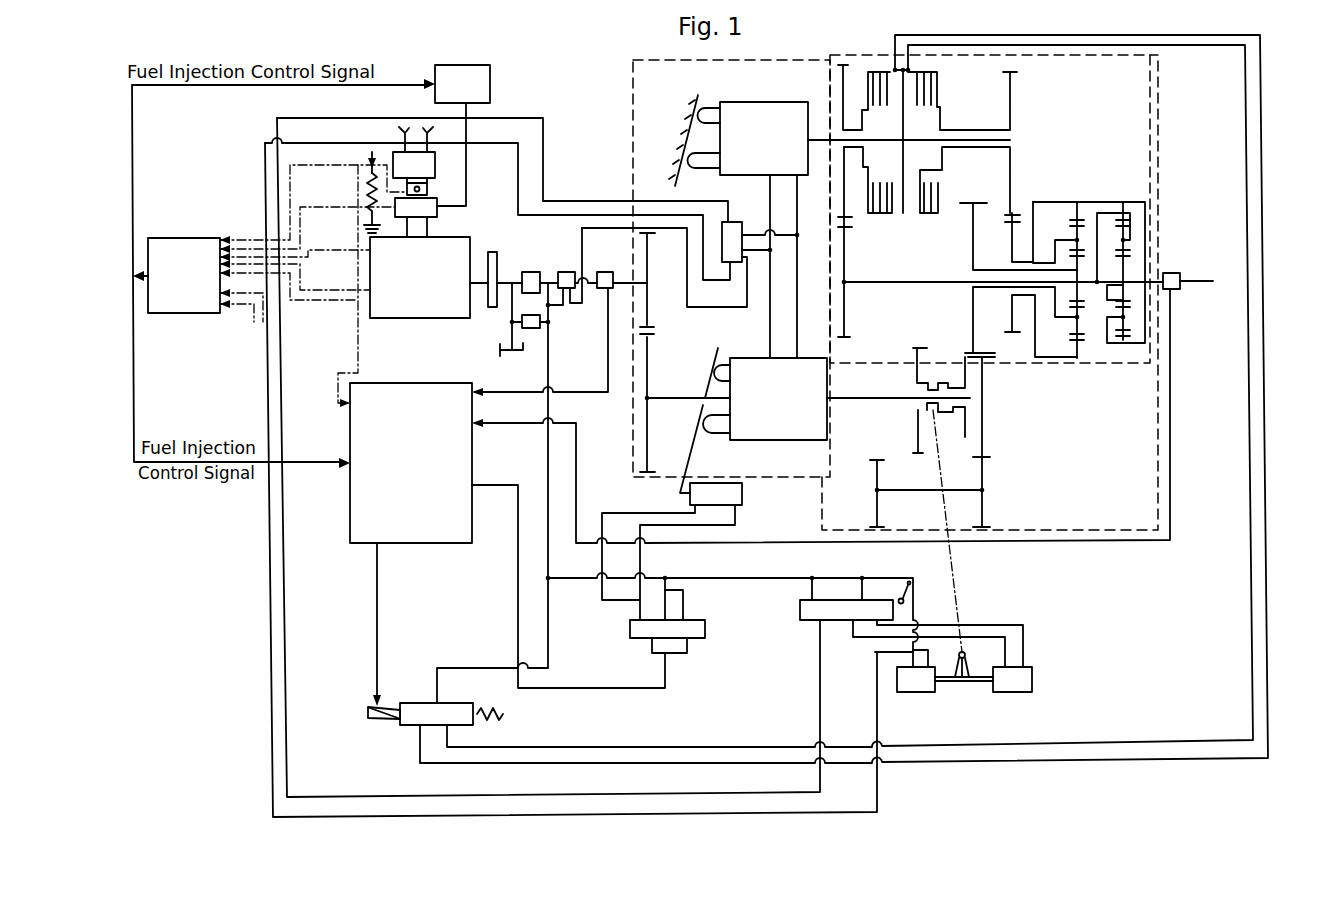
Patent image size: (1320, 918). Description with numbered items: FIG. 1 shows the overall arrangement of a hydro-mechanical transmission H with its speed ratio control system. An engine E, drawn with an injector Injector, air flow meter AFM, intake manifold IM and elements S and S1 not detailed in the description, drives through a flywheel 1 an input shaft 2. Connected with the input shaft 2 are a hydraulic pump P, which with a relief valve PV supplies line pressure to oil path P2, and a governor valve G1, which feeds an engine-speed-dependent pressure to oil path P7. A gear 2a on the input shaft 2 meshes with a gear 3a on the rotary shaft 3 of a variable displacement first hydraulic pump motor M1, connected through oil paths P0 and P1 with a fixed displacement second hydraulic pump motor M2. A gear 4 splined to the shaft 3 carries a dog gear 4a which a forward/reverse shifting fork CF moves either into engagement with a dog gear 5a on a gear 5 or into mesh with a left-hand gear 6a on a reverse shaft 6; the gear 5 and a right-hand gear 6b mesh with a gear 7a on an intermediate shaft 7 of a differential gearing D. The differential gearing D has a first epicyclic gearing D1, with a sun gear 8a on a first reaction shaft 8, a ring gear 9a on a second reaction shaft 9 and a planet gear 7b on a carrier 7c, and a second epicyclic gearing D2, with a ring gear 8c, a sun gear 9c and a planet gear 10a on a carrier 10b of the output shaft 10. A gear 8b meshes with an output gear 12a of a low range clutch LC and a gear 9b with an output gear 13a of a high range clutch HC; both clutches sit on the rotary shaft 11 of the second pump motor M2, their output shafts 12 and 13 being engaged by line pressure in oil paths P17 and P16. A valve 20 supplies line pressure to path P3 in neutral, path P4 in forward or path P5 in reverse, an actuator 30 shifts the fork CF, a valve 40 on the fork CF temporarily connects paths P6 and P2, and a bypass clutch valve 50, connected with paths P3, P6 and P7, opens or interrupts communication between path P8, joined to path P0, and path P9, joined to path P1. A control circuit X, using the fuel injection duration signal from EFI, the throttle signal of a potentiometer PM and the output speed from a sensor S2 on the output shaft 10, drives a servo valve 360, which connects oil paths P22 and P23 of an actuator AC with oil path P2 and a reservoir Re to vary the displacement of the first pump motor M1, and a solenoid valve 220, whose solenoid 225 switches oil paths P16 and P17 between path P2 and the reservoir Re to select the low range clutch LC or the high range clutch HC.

The flywheel 1 is at (493, 307).
The input shaft 2 is at (497, 270).
The gear 2a is at (654, 327).
The rotary shaft 3 is at (672, 397).
The gear 3a is at (654, 336).
The gear 4 is at (913, 455).
The dog gear 4a is at (943, 372).
The gear 5 is at (965, 438).
The dog gear 5a is at (968, 412).
The reverse shaft 6 is at (925, 492).
The left-hand gear 6a is at (872, 520).
The right-hand gear 6b is at (990, 457).
The intermediate shaft 7 is at (991, 288).
The gear 7a is at (968, 345).
The planet gear 7b is at (1070, 337).
The carrier 7c is at (1058, 238).
The first reaction shaft 8 is at (928, 280).
The sun gear 8a is at (1078, 274).
The gear 8b is at (854, 242).
The ring gear 8c is at (1123, 345).
The second reaction shaft 9 is at (1041, 326).
The ring gear 9a is at (1078, 358).
The gear 9b is at (1010, 222).
The sun gear 9c is at (1148, 295).
The output shaft 10 is at (1208, 283).
The planet gear 10a is at (1135, 228).
The carrier 10b is at (1148, 322).
The rotary shaft 11 is at (1013, 130).
The output shaft 12 is at (858, 150).
The output gear 12a is at (850, 222).
The output shaft 13 is at (975, 160).
The output gear 13a is at (1016, 212).
The valve 20 is at (855, 599).
The actuator 30 is at (1012, 679).
The valve 40 is at (916, 671).
The bypass clutch valve 50 is at (742, 222).
The solenoid valve 220 is at (451, 714).
The solenoid 225 is at (379, 720).
The servo valve 360 is at (687, 652).
The engine E is at (424, 286).
The control circuit X is at (412, 476).
The element EFI is at (184, 275).
The first hydraulic pump motor M1 is at (787, 415).
The second hydraulic pump motor M2 is at (775, 155).
The hydraulic pump P is at (531, 272).
The governor valve G1 is at (565, 272).
The speed sensor S1 is at (605, 272).
The sensor S2 is at (1181, 272).
The relief valve PV is at (531, 328).
The reservoir Re is at (500, 350).
The potentiometer PM is at (357, 178).
The sensor S is at (428, 189).
The actuator AC is at (672, 551).
The forward reverse shifting fork CF is at (965, 655).
The hydro-mechanical transmission H is at (628, 120).
The differential gearing D is at (1050, 363).
The first epicyclic gearing D1 is at (1074, 198).
The second epicyclic gearing D2 is at (1119, 198).
The low range clutch LC is at (865, 100).
The high range clutch HC is at (940, 86).
The fuel injector Injector is at (491, 80).
The air flow meter AFM is at (436, 165).
The intake manifold IM is at (437, 210).
The oil path P0 is at (772, 300).
The oil path P1 is at (799, 276).
The oil path P2 is at (482, 667).
The oil path P3 is at (696, 201).
The oil path P4 is at (866, 640).
The oil path P5 is at (1005, 624).
The oil path P6 is at (705, 282).
The oil path P7 is at (725, 308).
The oil path P8 is at (766, 255).
The oil path P9 is at (783, 230).
The oil path P16 is at (587, 745).
The oil path P17 is at (660, 764).
The oil path P22 is at (600, 590).
The oil path P23 is at (688, 604).